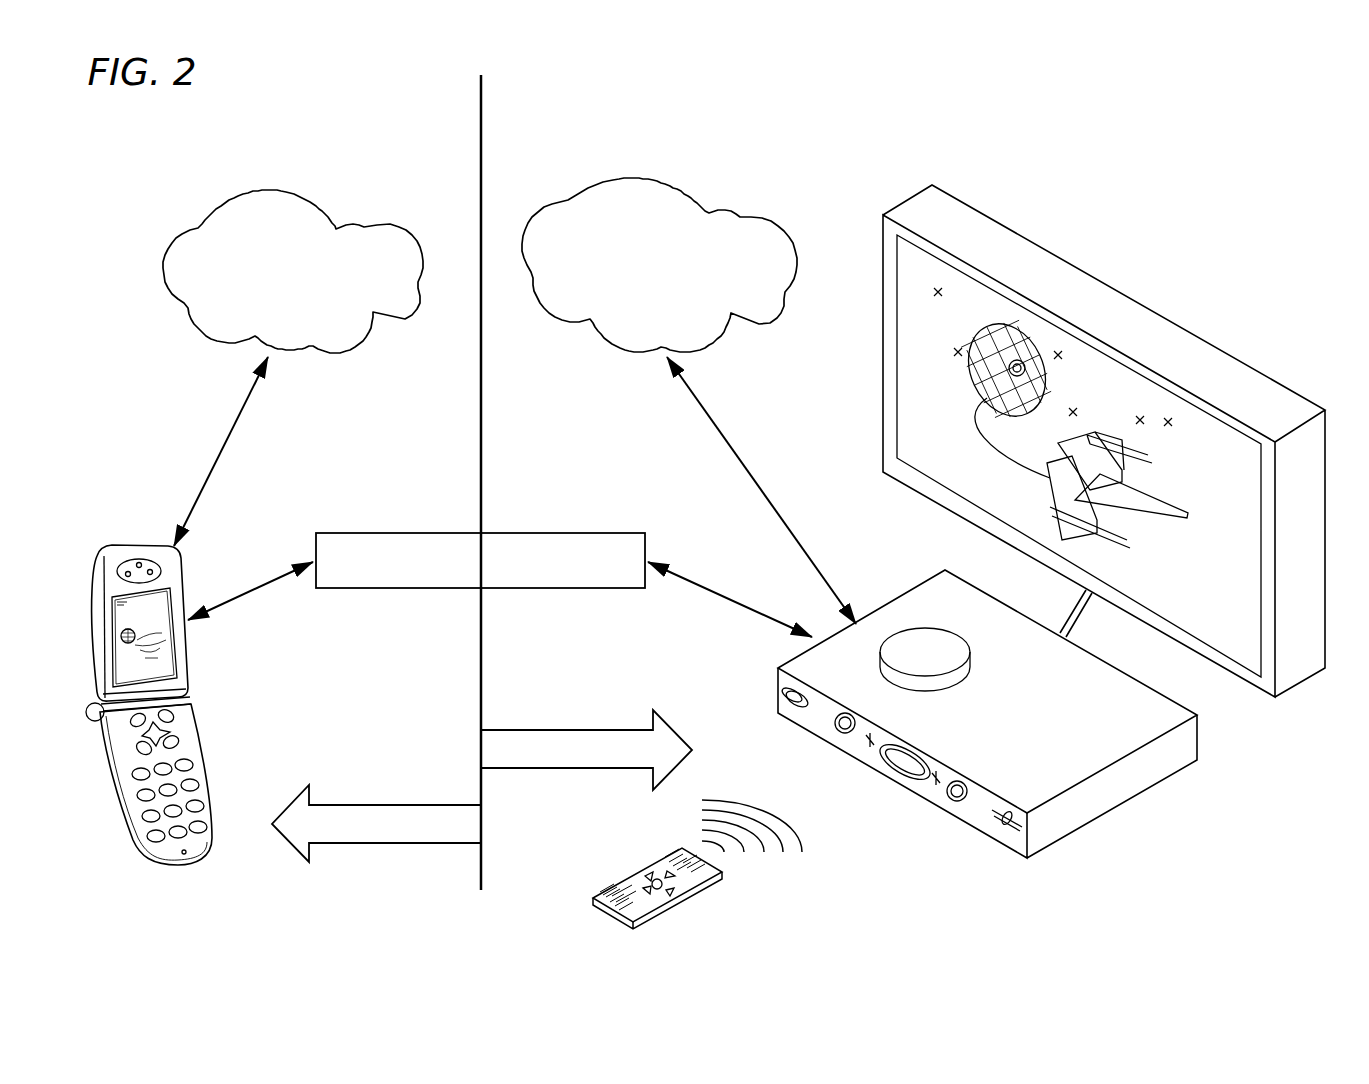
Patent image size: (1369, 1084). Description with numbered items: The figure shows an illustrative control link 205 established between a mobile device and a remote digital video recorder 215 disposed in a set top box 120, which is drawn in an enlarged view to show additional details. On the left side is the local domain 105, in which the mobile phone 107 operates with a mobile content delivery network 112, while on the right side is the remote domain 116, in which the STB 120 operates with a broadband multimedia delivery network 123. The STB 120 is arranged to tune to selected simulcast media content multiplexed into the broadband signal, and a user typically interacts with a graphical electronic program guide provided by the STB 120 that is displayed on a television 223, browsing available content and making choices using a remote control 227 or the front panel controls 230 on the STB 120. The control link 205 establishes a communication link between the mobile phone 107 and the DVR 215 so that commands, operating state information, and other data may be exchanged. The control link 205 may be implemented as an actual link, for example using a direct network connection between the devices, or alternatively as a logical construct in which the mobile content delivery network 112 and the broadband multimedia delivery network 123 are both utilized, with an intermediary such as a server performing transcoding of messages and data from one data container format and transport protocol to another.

The local domain 105 is at (397, 805).
The mobile phone 107 is at (190, 664).
The mobile content delivery network 112 is at (279, 190).
The remote domain 116 is at (549, 730).
The set top box 120 is at (1128, 797).
The broadband multimedia delivery network 123 is at (576, 188).
The control link 205 is at (593, 533).
The digital video recorder 215 is at (953, 686).
The television 223 is at (1300, 688).
The remote control 227 is at (703, 891).
The front panel controls 230 is at (920, 806).